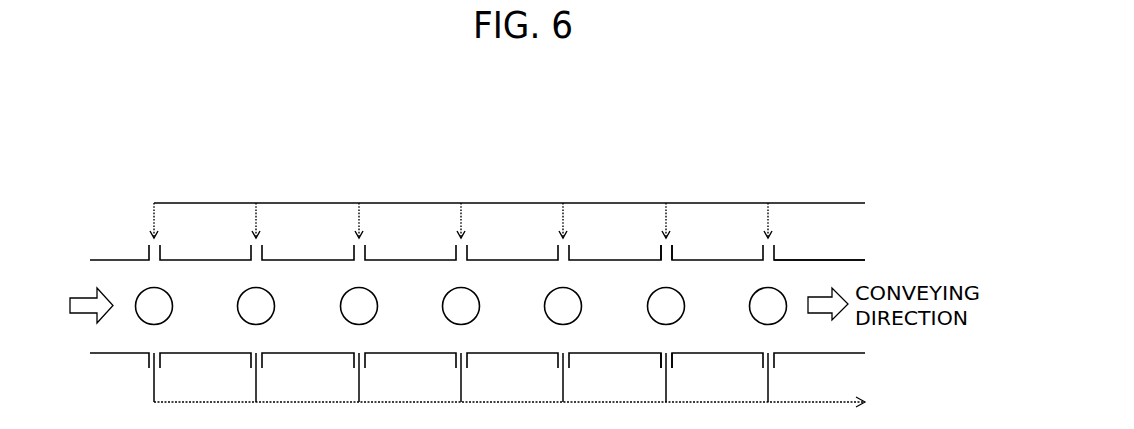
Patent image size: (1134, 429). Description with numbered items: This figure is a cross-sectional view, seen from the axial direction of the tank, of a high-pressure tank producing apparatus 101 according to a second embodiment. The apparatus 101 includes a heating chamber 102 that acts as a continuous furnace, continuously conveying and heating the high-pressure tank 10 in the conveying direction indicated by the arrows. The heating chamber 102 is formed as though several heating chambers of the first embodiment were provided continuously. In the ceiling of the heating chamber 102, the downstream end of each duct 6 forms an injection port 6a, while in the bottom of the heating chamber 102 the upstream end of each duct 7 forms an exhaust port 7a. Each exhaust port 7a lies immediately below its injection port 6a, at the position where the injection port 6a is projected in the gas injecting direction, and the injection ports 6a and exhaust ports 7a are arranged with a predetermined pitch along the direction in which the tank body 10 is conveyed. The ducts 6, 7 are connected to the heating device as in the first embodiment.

The high-pressure tank producing apparatus 101 is at (838, 170).
The heating chamber 102 is at (820, 258).
The duct 6 is at (674, 253).
The injection port 6a is at (668, 262).
The duct 7 is at (674, 365).
The exhaust port 7a is at (665, 343).
The high-pressure tank 10 is at (274, 300).